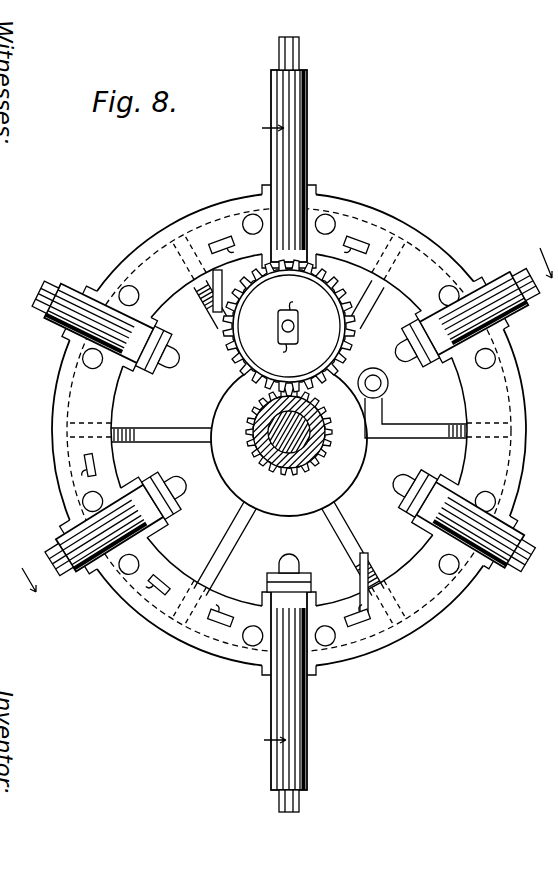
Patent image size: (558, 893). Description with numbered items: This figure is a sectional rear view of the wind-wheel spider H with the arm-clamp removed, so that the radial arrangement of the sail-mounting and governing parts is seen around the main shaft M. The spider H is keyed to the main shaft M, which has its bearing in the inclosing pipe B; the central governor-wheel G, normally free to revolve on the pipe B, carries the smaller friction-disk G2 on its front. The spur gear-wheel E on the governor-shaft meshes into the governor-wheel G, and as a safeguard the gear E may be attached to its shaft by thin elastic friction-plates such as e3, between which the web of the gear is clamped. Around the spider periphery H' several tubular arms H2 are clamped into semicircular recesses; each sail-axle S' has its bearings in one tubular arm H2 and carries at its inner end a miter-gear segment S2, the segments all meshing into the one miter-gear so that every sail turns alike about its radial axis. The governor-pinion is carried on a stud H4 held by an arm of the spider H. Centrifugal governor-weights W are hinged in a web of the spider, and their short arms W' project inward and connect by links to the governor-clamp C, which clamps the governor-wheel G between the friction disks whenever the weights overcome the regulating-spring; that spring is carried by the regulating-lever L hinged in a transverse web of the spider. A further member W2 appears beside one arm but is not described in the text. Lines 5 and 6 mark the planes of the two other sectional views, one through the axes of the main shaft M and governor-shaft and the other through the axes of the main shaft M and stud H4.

The sail-axle S' is at (274, 424).
The tubular arm H2 is at (307, 101).
The miter-gear segment S2 is at (154, 364).
The wind-wheel spider H is at (289, 437).
The spider periphery H' is at (289, 430).
The stud H4 is at (374, 383).
The spur gear-wheel E is at (352, 336).
The friction-plate e3 is at (300, 328).
The governor-wheel G is at (256, 449).
The smaller friction-disk G2 is at (227, 452).
The main shaft M is at (287, 456).
The inclosing pipe B is at (306, 455).
The centrifugal governor-weight W is at (286, 435).
The short arm W' is at (201, 298).
The clamp plate W2 is at (360, 583).
The governor-clamp C is at (196, 291).
The regulating-lever L is at (80, 468).
The section plane 5 is at (269, 430).
The section plane 6 is at (282, 420).